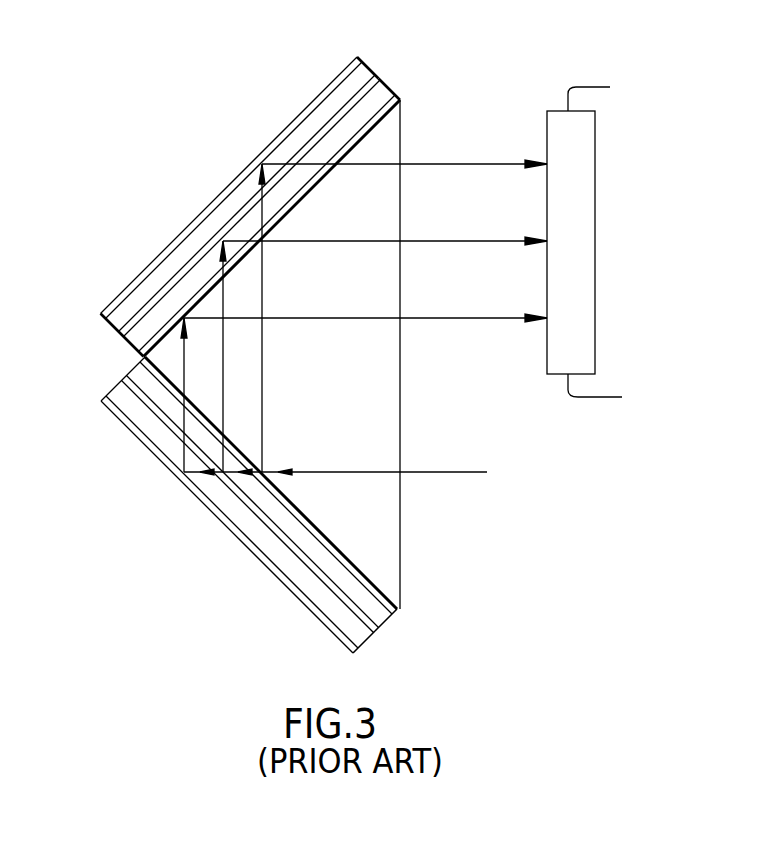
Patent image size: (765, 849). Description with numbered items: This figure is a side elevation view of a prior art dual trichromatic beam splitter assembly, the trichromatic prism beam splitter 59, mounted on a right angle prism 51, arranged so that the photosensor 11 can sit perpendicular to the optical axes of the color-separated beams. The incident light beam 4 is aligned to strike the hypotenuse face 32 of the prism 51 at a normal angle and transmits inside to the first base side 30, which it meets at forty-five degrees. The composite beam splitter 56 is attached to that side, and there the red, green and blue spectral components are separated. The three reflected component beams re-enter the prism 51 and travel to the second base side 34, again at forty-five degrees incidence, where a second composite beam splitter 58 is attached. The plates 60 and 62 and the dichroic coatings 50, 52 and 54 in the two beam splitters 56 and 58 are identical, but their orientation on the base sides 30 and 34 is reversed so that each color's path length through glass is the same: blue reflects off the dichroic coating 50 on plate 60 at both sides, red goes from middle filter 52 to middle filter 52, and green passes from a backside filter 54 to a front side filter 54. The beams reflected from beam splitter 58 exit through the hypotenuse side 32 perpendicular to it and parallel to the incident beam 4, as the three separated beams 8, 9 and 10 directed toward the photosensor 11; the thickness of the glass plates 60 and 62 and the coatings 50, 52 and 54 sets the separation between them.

The incident light beam 4 is at (443, 472).
The first output beam 8 is at (470, 318).
The second output beam 9 is at (463, 242).
The third output beam 10 is at (470, 164).
The photosensor 11 is at (600, 149).
The first base side 30 is at (372, 580).
The hypotenuse face 32 is at (402, 507).
The second base side 34 is at (378, 127).
The dichroic coating 50 is at (357, 57).
The right angle prism 51 is at (406, 368).
The middle filter 52 is at (382, 78).
The backside filter 54 is at (403, 100).
The composite beam splitter 56 is at (210, 527).
The second composite beam splitter 58 is at (203, 210).
The trichromatic prism beam splitter 59 is at (249, 351).
The plate 60 is at (106, 316).
The plate 62 is at (138, 341).